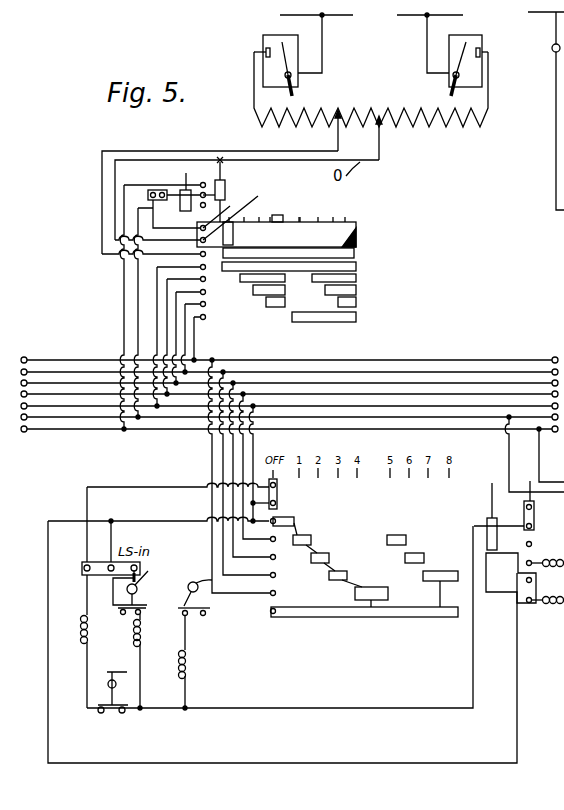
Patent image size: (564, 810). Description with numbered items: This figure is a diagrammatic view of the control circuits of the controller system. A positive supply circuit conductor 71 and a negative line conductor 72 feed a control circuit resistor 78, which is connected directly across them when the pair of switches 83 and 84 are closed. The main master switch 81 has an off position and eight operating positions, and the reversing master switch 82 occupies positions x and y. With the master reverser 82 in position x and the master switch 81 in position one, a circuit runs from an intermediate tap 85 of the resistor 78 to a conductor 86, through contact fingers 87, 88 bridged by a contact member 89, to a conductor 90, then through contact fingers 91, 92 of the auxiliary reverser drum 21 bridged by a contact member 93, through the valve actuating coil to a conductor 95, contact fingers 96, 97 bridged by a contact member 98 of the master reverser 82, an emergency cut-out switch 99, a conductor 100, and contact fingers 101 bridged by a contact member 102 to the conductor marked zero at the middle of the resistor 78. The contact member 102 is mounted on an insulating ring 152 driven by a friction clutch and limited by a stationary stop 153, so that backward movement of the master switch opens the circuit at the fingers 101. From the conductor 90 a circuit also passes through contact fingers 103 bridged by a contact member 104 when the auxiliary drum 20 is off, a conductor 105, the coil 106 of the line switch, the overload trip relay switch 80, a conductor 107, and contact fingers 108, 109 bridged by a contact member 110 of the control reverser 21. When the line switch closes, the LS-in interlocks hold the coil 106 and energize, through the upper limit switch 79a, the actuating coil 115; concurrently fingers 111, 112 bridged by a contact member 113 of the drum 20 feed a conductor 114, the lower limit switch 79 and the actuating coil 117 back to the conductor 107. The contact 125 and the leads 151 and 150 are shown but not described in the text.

The negative line conductor 72 is at (300, 17).
The positive supply circuit conductor 71 is at (427, 16).
The switch 83 is at (263, 45).
The switch 84 is at (460, 41).
The intermediate tap 85 is at (346, 104).
The control circuit resistor 78 is at (404, 114).
The lead 151 is at (556, 119).
The unit 150 is at (547, 273).
The reversing master switch 82 is at (191, 163).
The conductor 86 is at (102, 219).
The emergency cut-out switch 99 is at (160, 190).
The contact finger 96 is at (208, 180).
The contact member 98 is at (226, 184).
The contact finger 97 is at (225, 194).
The conductor 100 is at (145, 216).
The contact fingers 101 is at (199, 217).
The contact member 102 is at (234, 237).
The contact member 89 is at (289, 254).
The stationary pin or stop 153 is at (277, 216).
The main master switch 81 is at (338, 215).
The insulating ring 152 is at (358, 233).
The contact finger 87 is at (200, 254).
The contact finger 88 is at (201, 267).
The conductor 95 is at (124, 286).
The conductor 90 is at (157, 327).
The conductor 105 is at (88, 500).
The contact fingers 103 is at (278, 486).
The contact member 104 is at (280, 504).
The contact finger 111 is at (296, 521).
The contact member 113 is at (328, 559).
The auxiliary or control drum 20 is at (326, 545).
The contact finger 112 is at (276, 609).
The conductor 114 is at (272, 613).
The contact member 110 is at (490, 530).
The contact finger 108 is at (535, 513).
The contact finger 109 is at (532, 545).
The contact finger 91 is at (527, 580).
The contact finger 92 is at (534, 594).
The contact member 93 is at (505, 594).
The reversing auxiliary or control drum 21 is at (520, 604).
The upper limit switch 79a is at (142, 592).
The lower limit switch 79 is at (214, 583).
The contact 125 is at (178, 610).
The actuating coil 115 is at (142, 630).
The actuating coil 117 is at (190, 662).
The coil of the line switch 106 is at (86, 640).
The overload trip relay switch 80 is at (128, 698).
The conductor 107 is at (291, 711).